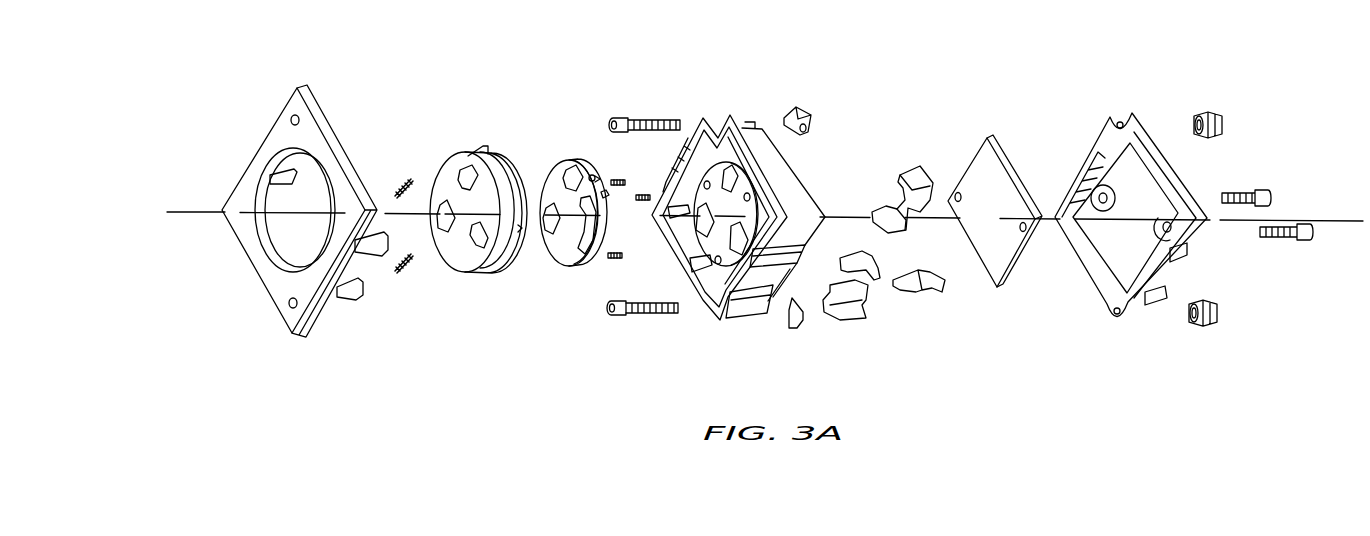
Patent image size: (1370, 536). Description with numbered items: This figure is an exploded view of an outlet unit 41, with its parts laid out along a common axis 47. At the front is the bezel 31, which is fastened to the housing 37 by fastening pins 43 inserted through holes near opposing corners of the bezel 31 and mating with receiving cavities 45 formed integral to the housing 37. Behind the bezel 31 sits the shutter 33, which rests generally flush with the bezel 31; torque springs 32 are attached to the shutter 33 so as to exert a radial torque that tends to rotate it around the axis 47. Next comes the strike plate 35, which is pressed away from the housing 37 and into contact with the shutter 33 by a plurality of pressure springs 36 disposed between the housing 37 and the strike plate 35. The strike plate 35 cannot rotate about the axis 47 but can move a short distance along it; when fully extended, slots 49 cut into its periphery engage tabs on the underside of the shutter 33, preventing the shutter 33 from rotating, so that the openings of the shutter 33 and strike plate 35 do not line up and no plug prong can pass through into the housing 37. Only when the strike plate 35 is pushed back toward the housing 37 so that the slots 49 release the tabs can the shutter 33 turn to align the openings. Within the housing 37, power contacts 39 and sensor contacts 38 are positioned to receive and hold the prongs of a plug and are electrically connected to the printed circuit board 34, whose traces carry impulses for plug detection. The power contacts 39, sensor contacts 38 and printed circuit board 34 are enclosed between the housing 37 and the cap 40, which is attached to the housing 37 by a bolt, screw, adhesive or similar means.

The bezel 31 is at (308, 340).
The torque springs 32 is at (403, 270).
The shutter 33 is at (473, 280).
The printed circuit board 34 is at (1002, 162).
The strike plate 35 is at (560, 265).
The pressure springs 36 is at (612, 262).
The housing 37 is at (758, 312).
The sensor contacts 38 is at (870, 257).
The power contacts 39 is at (862, 322).
The cap 40 is at (1187, 178).
The outlet unit 41 is at (1201, 352).
The fastening pins 43 is at (639, 122).
The receiving cavities 45 is at (768, 138).
The axis 47 is at (190, 212).
The slots 49 is at (592, 174).